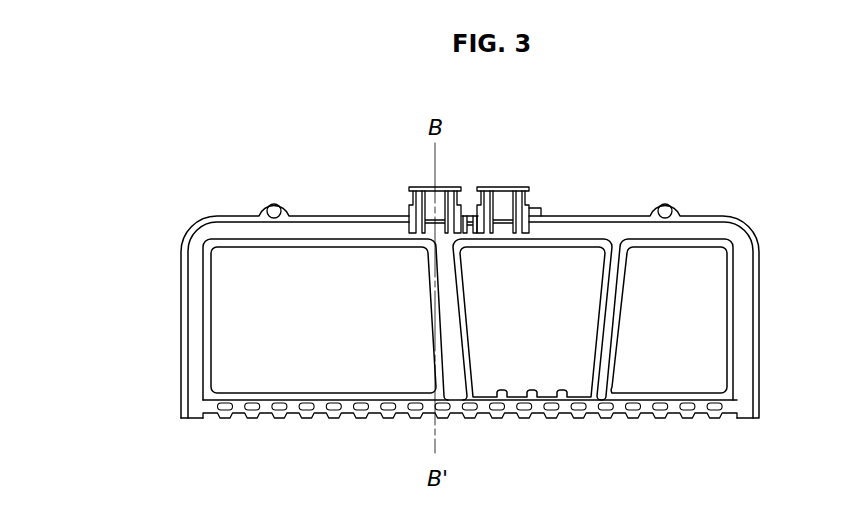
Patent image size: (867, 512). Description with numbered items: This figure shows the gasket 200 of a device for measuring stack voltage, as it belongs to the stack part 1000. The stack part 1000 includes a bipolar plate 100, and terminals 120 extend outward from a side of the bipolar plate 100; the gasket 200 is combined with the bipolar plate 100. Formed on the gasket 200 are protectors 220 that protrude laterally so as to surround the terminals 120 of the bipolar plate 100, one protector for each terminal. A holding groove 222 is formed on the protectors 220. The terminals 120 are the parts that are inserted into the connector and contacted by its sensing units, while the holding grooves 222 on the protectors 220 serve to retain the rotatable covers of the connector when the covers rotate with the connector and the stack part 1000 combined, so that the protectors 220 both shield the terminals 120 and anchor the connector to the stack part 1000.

The stack part 1000 is at (166, 257).
The bipolar plate 100 is at (235, 217).
The terminals 120 is at (500, 198).
The gasket 200 is at (697, 229).
The protectors 220 is at (531, 208).
The holding groove 222 is at (412, 198).